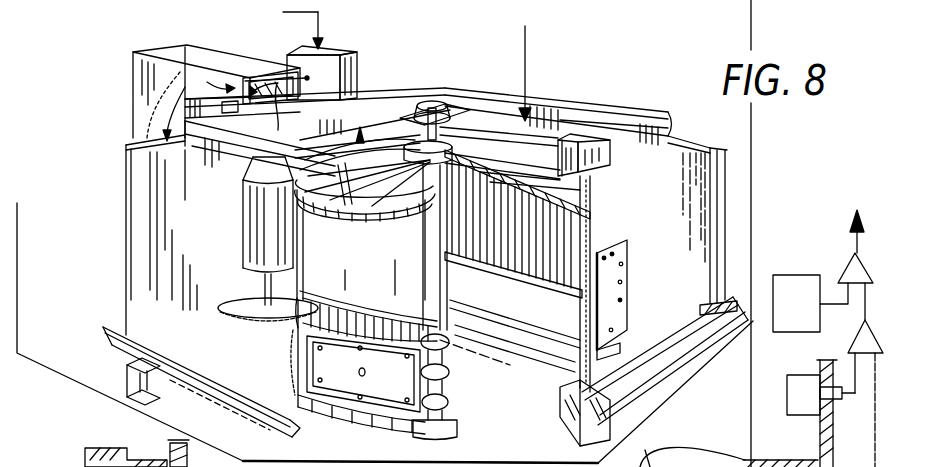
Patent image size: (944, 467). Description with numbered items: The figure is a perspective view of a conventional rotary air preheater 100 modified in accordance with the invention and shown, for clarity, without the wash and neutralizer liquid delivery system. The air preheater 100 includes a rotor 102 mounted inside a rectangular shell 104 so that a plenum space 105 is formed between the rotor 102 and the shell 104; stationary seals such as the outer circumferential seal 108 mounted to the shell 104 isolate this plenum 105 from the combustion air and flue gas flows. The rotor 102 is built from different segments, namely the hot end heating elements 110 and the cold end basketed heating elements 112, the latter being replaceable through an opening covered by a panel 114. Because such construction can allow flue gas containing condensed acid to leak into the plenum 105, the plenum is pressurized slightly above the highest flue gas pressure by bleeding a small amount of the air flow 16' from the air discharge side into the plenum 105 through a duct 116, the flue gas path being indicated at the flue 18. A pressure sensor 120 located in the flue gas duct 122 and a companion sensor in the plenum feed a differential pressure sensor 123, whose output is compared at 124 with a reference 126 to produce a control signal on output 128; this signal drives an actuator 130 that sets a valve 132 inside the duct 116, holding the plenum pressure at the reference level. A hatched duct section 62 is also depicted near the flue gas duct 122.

The rotary air preheater 100 is at (118, 260).
The rotor 102 is at (379, 268).
The rectangular shell 104 is at (134, 199).
The plenum space 105 is at (172, 160).
The outer circumferential seal 108 is at (568, 196).
The hot end heating elements 110 is at (574, 228).
The cold end basketed heating elements 112 is at (380, 378).
The panel 114 is at (618, 281).
The duct 116 is at (190, 48).
The pressure sensor 120 is at (788, 385).
The flue gas duct 122 is at (451, 453).
The differential pressure sensor 123 is at (880, 333).
The comparator 124 is at (843, 268).
The reference 126 is at (802, 333).
The output 128 is at (318, 12).
The actuator 130 is at (357, 58).
The valve 132 is at (235, 62).
The rotor 16' is at (385, 174).
The flue 18 is at (528, 62).
The duct 62 is at (664, 464).